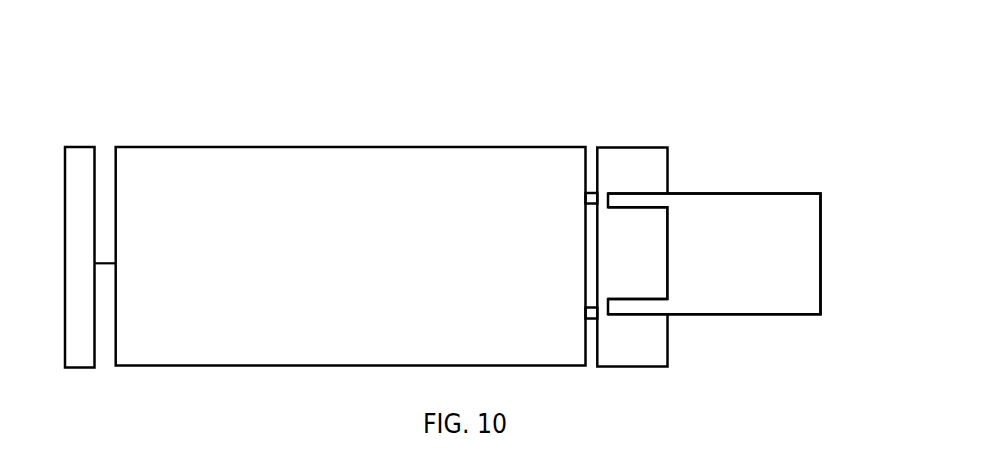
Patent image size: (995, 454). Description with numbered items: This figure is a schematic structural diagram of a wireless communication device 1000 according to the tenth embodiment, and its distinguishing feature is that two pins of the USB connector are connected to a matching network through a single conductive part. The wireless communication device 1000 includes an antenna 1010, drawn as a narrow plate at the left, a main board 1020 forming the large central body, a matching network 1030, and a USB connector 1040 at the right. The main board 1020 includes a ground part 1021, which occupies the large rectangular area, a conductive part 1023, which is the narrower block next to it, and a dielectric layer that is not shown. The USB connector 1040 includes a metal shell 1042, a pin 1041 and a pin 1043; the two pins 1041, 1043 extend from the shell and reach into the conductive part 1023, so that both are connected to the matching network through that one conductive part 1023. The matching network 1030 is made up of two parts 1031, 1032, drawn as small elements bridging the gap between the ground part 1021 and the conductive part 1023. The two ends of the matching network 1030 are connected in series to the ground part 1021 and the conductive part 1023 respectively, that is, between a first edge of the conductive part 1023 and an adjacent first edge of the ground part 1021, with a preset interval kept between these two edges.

The wireless communication device 1000 is at (473, 55).
The antenna 1010 is at (148, 226).
The main board 1020 is at (381, 208).
The ground part 1021 is at (351, 233).
The conductive part 1023 is at (551, 234).
The matching network 1030 is at (474, 276).
The first part of the matching network 1031 is at (533, 225).
The second part of the matching network 1032 is at (529, 334).
The USB connector 1040 is at (735, 242).
The pin 1041 is at (689, 169).
The metal shell 1042 is at (756, 235).
The pin 1043 is at (710, 338).